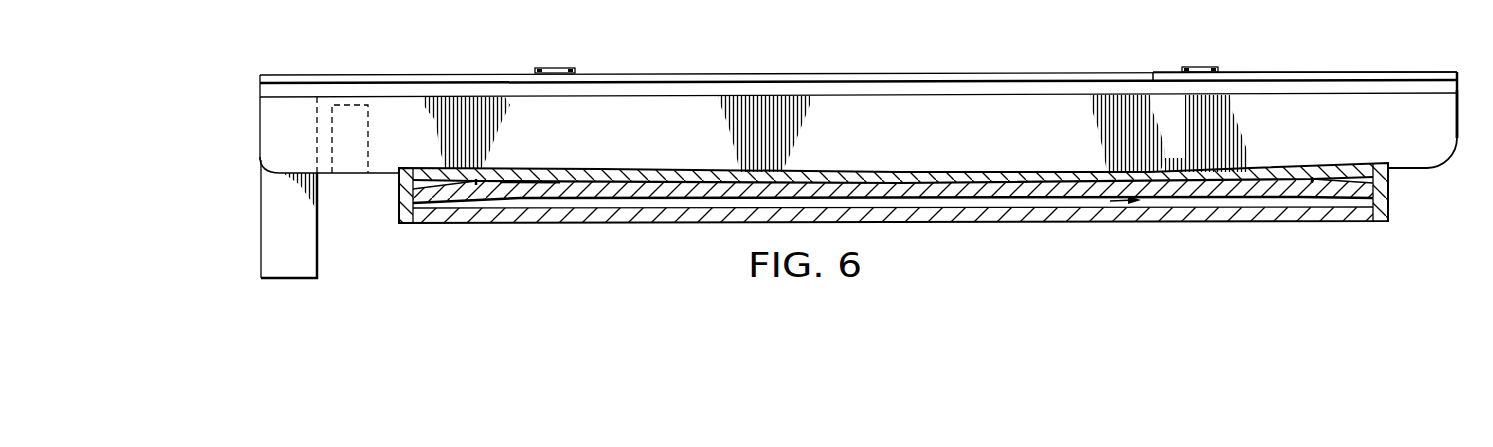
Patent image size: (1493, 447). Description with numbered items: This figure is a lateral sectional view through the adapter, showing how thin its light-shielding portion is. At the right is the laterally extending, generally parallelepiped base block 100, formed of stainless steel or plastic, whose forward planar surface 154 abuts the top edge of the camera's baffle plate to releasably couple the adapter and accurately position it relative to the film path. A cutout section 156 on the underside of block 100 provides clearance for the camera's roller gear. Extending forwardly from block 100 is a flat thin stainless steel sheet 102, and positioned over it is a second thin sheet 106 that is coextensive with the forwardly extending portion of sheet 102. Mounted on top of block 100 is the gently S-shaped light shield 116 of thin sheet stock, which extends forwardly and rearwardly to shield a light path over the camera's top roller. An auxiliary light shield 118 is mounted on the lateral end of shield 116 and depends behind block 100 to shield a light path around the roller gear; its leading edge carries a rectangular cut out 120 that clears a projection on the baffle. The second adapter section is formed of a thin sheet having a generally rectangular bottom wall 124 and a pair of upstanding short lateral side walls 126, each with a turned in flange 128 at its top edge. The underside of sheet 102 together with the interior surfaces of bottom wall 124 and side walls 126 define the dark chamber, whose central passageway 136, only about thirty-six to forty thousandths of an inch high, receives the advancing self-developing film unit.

The base block 100 is at (841, 155).
The sheet 102 is at (637, 182).
The second thin sheet 106 is at (533, 179).
The light shield 116 is at (410, 82).
The auxiliary light shield 118 is at (270, 225).
The rectangular cut out 120 is at (1252, 75).
The bottom wall 124 is at (641, 224).
The lateral side walls 126 is at (408, 204).
The turned in flange 128 is at (430, 182).
The central passageway 136 is at (1110, 201).
The forward planar surface 154 is at (1433, 128).
The cutout section 156 is at (358, 116).